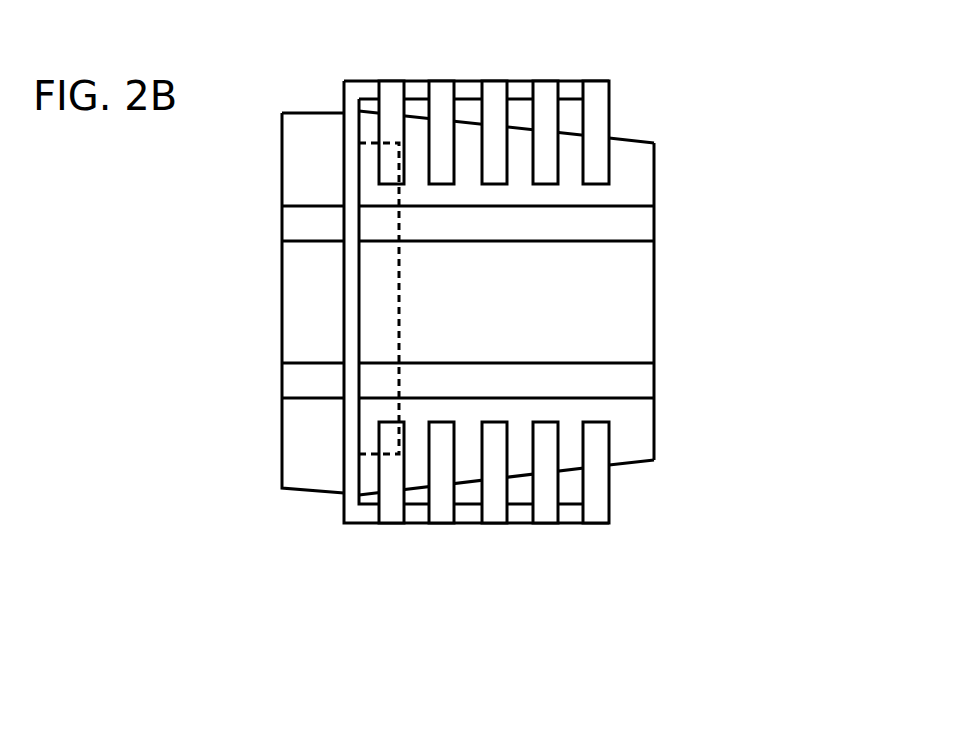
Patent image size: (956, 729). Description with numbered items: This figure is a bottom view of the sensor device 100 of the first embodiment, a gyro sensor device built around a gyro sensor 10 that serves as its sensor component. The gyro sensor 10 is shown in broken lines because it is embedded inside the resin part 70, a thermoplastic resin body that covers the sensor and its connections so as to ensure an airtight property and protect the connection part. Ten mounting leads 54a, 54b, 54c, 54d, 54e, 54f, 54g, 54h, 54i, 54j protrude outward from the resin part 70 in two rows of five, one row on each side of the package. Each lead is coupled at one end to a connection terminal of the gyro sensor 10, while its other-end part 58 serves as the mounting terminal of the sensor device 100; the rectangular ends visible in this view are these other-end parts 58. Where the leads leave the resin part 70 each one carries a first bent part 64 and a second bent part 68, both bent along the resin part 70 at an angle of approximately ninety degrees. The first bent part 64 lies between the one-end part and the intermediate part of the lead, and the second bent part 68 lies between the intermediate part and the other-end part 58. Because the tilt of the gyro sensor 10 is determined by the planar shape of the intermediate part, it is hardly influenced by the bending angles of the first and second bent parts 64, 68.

The sensor device 100 is at (268, 110).
The gyro sensor 10 is at (398, 287).
The mounting lead 54a is at (394, 525).
The mounting lead 54b is at (441, 525).
The mounting lead 54c is at (493, 525).
The mounting lead 54d is at (545, 525).
The mounting lead 54e is at (596, 525).
The mounting lead 54f is at (394, 80).
The mounting lead 54g is at (440, 80).
The mounting lead 54h is at (497, 80).
The mounting lead 54i is at (541, 72).
The mounting lead 54j is at (620, 120).
The other-end part 58 is at (598, 170).
The first bent part 64 is at (352, 80).
The second bent part 68 is at (392, 81).
The resin part 70 is at (636, 290).